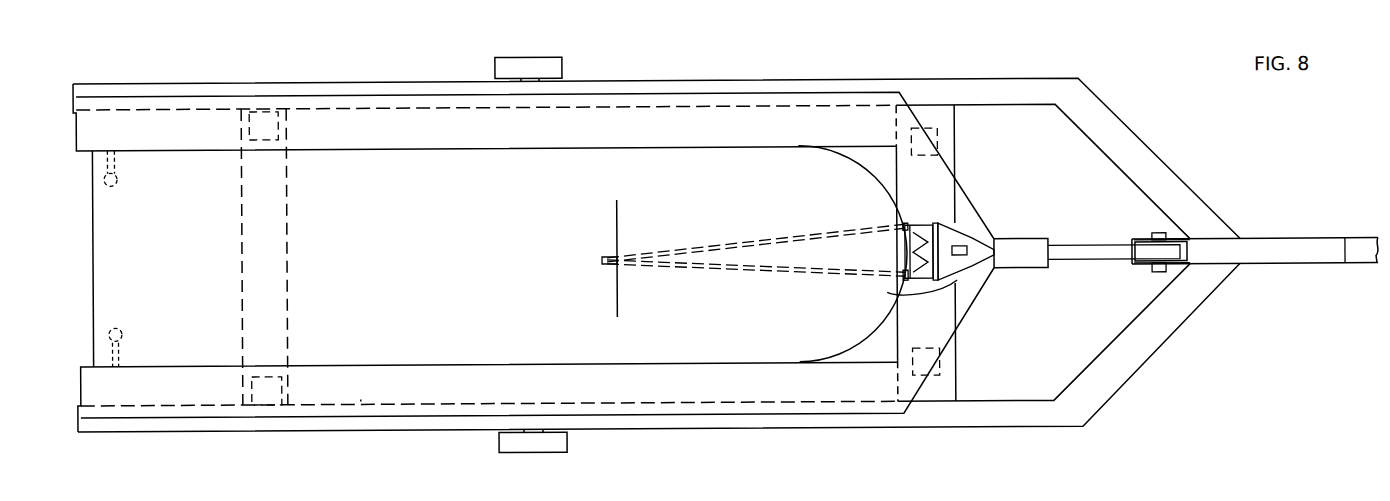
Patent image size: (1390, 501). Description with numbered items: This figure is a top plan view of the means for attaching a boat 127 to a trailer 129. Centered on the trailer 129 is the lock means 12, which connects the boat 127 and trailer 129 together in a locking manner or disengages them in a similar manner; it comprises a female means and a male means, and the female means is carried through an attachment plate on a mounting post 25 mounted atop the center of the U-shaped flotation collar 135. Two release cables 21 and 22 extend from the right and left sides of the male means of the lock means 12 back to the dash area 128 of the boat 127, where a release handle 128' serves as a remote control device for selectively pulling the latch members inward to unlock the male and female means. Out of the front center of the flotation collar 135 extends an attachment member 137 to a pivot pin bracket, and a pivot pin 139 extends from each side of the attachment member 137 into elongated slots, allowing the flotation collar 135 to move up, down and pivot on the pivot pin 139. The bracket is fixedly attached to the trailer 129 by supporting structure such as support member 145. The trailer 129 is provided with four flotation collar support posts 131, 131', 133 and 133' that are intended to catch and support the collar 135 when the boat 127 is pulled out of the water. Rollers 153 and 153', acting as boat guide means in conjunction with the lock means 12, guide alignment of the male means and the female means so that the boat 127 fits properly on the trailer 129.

The lock means 12 is at (965, 272).
The release cable 21 is at (814, 272).
The release cable 22 is at (790, 241).
The mounting post 25 is at (1020, 252).
The boat 127 is at (805, 338).
The dash area 128 is at (652, 253).
The release handle 128' is at (570, 241).
The trailer 129 is at (1018, 80).
The flotation collar support post 131 is at (301, 389).
The flotation collar support post 131' is at (301, 130).
The flotation collar support post 133 is at (960, 367).
The flotation collar support post 133' is at (958, 136).
The flotation collar 135 is at (362, 400).
The attachment member 137 is at (1085, 254).
The pivot pin 139 is at (1157, 235).
The support member 145 is at (1356, 245).
The roller 153 is at (147, 344).
The roller 153' is at (146, 188).